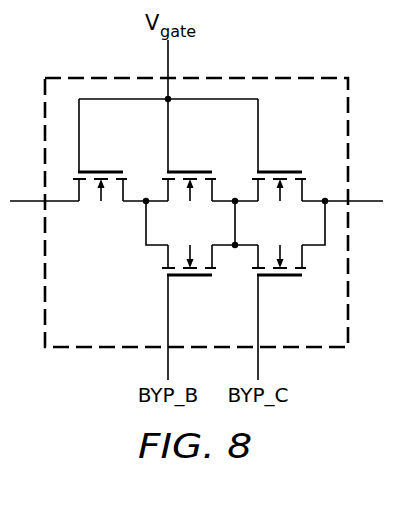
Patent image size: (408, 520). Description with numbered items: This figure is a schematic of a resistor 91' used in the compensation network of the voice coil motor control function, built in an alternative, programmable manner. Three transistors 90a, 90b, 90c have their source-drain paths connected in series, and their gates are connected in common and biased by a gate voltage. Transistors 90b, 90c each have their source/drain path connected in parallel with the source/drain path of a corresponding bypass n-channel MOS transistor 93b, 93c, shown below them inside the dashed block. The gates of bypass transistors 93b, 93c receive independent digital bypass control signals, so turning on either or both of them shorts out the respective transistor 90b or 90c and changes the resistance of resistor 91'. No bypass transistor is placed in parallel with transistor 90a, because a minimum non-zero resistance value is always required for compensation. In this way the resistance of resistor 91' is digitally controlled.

The transistor 90a is at (113, 170).
The transistor 90b is at (202, 170).
The transistor 90c is at (293, 170).
The bypass n-channel MOS transistor 93b is at (203, 279).
The bypass n-channel MOS transistor 93c is at (293, 279).
The resistor 91' is at (196, 212).